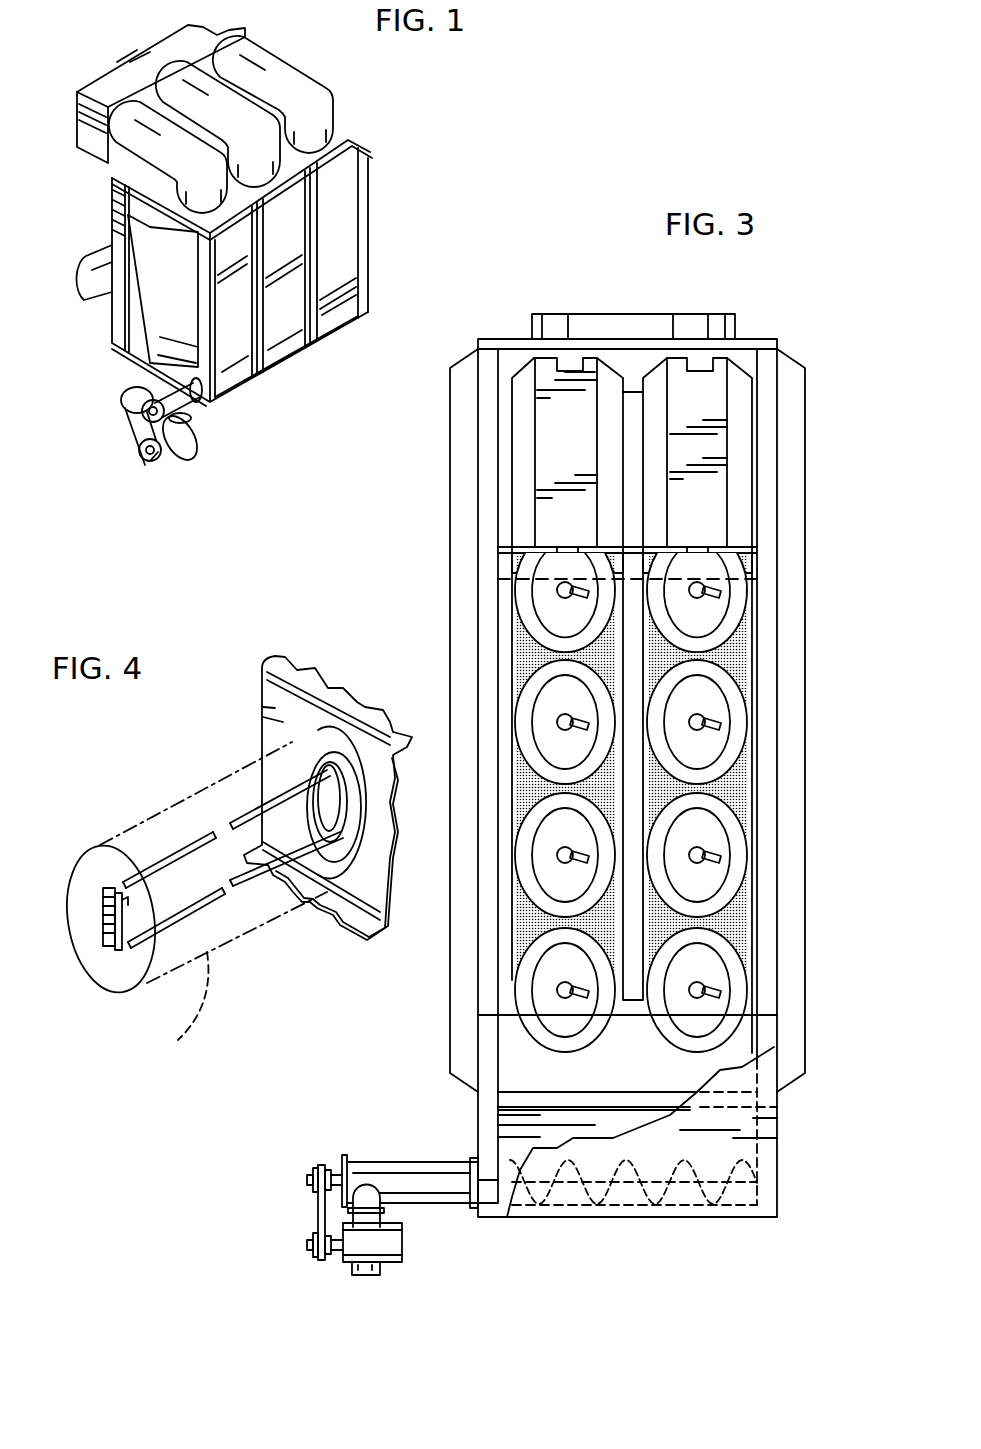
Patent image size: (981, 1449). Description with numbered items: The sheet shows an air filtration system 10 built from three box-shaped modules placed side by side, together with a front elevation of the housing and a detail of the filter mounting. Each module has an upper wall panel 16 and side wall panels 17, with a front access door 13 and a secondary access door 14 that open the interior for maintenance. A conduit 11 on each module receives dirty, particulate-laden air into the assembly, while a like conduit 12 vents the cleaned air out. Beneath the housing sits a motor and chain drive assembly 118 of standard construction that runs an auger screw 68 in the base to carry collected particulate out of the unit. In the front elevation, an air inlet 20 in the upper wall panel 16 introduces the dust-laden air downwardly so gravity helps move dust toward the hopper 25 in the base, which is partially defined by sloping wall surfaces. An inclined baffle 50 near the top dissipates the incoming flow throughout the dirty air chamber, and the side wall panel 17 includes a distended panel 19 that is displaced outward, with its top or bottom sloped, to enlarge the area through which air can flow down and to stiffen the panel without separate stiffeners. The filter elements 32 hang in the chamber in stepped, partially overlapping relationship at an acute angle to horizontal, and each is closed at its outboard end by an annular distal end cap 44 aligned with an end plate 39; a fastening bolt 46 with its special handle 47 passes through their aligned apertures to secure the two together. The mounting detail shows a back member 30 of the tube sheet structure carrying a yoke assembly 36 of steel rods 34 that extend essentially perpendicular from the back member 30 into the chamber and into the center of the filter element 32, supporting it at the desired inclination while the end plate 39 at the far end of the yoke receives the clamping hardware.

In FIG. 1, the air filtration system 10 is at (231, 274).
In FIG. 3, the air filtration system 10 is at (533, 766).
In FIG. 1, the conduit 11 is at (273, 85).
In FIG. 1, the conduit 12 is at (98, 267).
In FIG. 1, the front access door 13 is at (233, 372).
In FIG. 1, the secondary access door 14 is at (365, 235).
In FIG. 1, the upper wall panel 16 is at (340, 142).
In FIG. 1, the side wall panel 17 is at (118, 315).
In FIG. 3, the side wall panel 17 is at (492, 599).
In FIG. 3, the distended panel 19 is at (803, 1022).
In FIG. 3, the air inlet 20 is at (652, 305).
In FIG. 3, the hopper 25 is at (515, 1052).
In FIG. 4, the back member 30 is at (275, 694).
In FIG. 4, the filter element 32 is at (181, 1010).
In FIG. 4, the guide rail 34 is at (334, 806).
In FIG. 4, the yoke assembly 36 is at (180, 803).
In FIG. 4, the end plate 39 is at (109, 928).
In FIG. 3, the annular distal end cap 44 is at (748, 725).
In FIG. 3, the fastening bolt 46 is at (705, 592).
In FIG. 3, the handle 47 is at (717, 990).
In FIG. 3, the inclined baffle 50 is at (722, 446).
In FIG. 3, the auger 68 is at (623, 1173).
In FIG. 1, the motor and chain drive assembly 118 is at (166, 468).
In FIG. 3, the motor and chain drive assembly 118 is at (292, 1198).